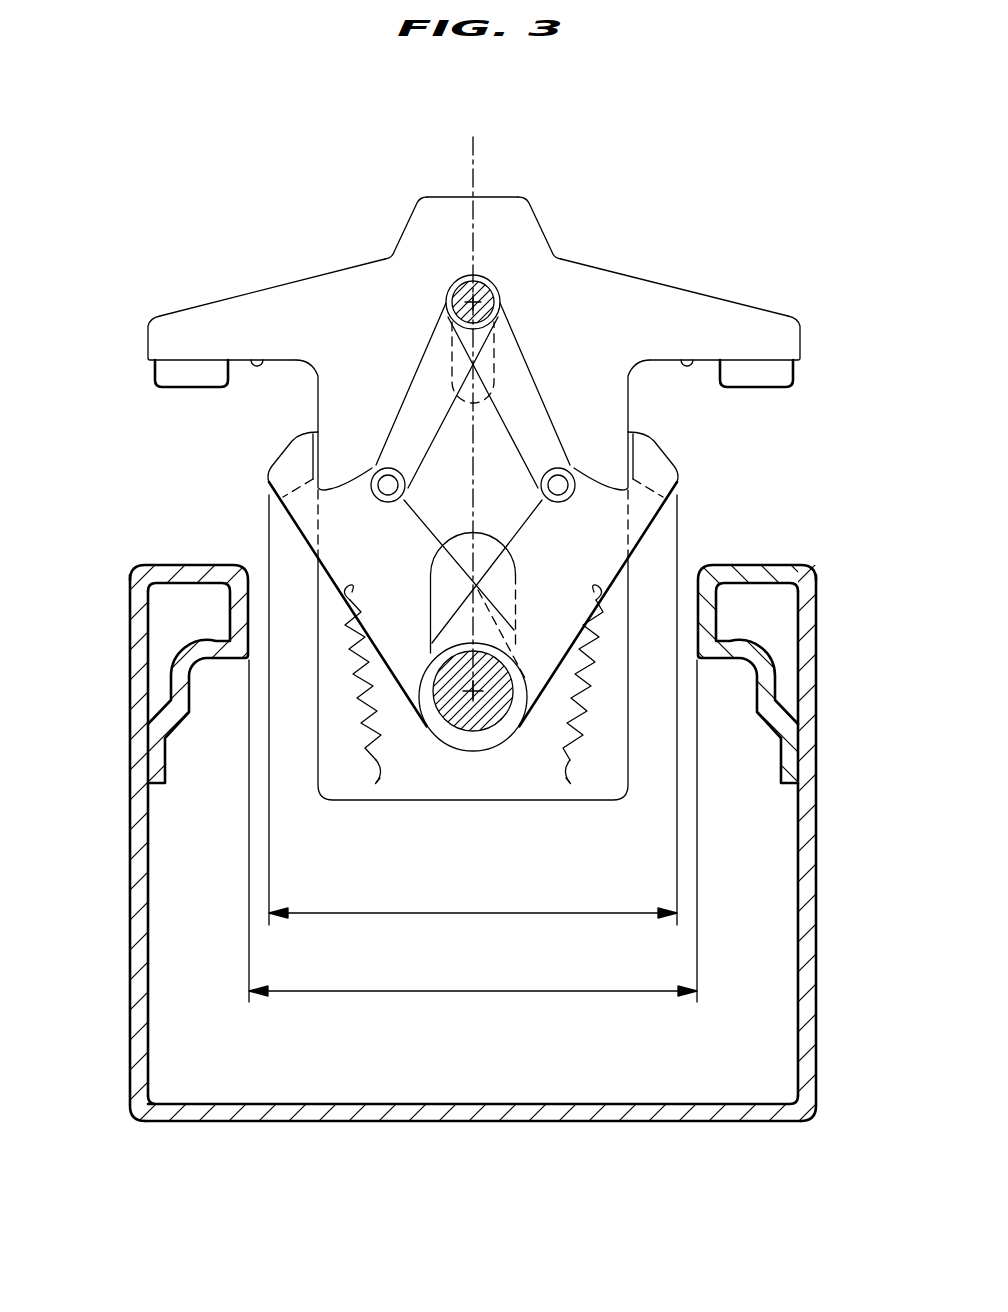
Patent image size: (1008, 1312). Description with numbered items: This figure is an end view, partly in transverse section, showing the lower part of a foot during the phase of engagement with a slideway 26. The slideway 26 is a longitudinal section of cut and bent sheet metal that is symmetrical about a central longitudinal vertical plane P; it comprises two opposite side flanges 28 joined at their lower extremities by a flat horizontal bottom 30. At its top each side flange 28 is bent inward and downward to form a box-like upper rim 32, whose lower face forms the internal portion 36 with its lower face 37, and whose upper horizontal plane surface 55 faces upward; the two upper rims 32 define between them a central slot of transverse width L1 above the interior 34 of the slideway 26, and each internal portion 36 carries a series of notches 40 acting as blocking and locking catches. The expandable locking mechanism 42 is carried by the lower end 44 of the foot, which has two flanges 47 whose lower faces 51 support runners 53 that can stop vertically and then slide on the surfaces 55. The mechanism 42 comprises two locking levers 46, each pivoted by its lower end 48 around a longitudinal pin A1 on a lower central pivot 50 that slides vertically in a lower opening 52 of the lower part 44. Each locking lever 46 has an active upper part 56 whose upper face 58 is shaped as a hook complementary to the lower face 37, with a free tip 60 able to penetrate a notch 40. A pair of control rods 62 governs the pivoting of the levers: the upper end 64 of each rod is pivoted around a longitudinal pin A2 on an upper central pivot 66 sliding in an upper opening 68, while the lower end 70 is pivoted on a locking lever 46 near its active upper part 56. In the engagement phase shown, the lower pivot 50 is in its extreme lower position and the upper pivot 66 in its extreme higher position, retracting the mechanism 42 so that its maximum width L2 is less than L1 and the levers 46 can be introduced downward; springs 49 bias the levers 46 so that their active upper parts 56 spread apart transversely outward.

The central longitudinal vertical plane P is at (470, 148).
The slideway 26 is at (460, 843).
The side flange 28 is at (818, 836).
The flat horizontal bottom 30 is at (575, 1110).
The upper rim 32 is at (204, 620).
The interior of slideway 34 is at (404, 1063).
The internal portion of upper rim 36 is at (205, 690).
The lower face of internal portion 37 is at (198, 663).
The notch 40 is at (186, 682).
The expandable locking mechanism 42 is at (472, 378).
The lower end of foot 44 is at (615, 290).
The locking lever 46 is at (330, 580).
The flange 47 is at (178, 338).
The lower end of locking lever 48 is at (480, 737).
The spring 49 is at (364, 718).
The lower central pivot 50 is at (462, 718).
The lower face of flange 51 is at (262, 357).
The lower opening 52 is at (430, 600).
The runner 53 is at (162, 375).
The upper horizontal plane surface 55 is at (177, 564).
The active upper part of locking lever 56 is at (297, 509).
The hook-shaped upper face 58 is at (320, 452).
The free tip of hook 60 is at (307, 430).
The control rod 62 is at (524, 430).
The upper end of control rod 64 is at (557, 257).
The upper central pivot 66 is at (460, 297).
The upper opening 68 is at (494, 352).
The lower end of control rod 70 is at (386, 498).
The longitudinal pin A1 is at (470, 690).
The longitudinal pin A2 is at (474, 300).
The transverse width of slot L1 is at (473, 831).
The maximum transverse width of mechanism L2 is at (473, 710).